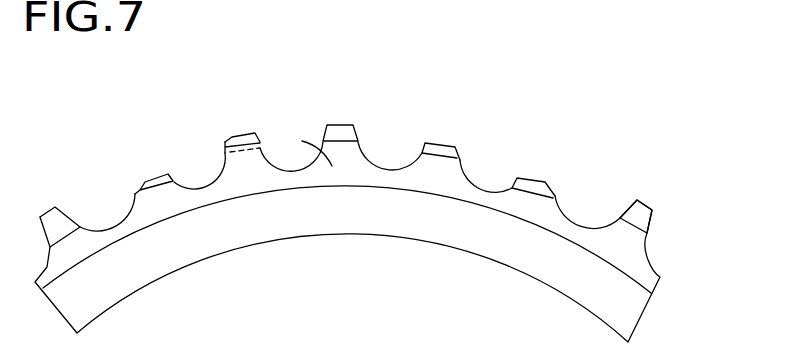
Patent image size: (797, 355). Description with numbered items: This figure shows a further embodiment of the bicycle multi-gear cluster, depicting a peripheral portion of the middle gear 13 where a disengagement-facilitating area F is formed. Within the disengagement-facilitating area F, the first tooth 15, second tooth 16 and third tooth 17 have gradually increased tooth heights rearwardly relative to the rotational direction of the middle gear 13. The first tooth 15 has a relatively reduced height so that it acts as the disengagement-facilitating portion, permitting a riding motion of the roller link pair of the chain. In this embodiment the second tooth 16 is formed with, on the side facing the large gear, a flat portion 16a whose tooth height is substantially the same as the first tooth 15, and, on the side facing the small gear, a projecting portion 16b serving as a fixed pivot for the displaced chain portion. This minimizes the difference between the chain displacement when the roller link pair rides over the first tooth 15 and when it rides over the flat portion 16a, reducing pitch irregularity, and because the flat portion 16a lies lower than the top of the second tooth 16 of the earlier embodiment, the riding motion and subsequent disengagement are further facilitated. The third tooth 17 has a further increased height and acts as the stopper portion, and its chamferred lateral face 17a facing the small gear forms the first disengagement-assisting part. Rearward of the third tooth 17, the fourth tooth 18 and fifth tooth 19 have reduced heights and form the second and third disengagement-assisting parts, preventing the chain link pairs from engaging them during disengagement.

The middle gear 13 is at (675, 206).
The first tooth 15 is at (153, 198).
The second tooth 16 is at (357, 75).
The flat portion 16a is at (225, 138).
The projecting portion 16b is at (232, 140).
The third tooth 17 is at (360, 145).
The chamferred lateral face 17a is at (333, 150).
The fourth tooth 18 is at (432, 168).
The fifth tooth 19 is at (528, 197).
The disengagement-facilitating area F is at (422, 102).